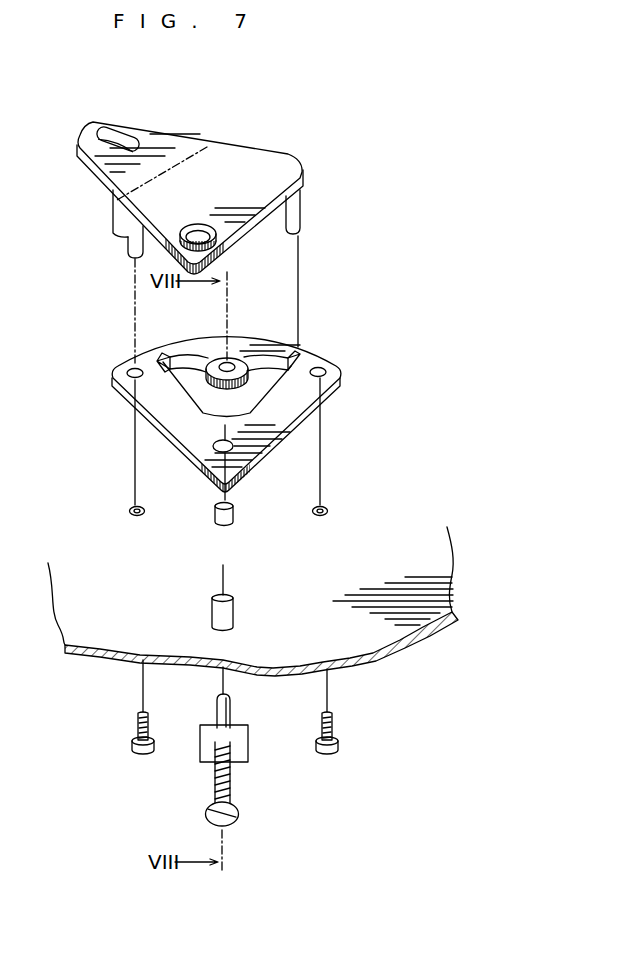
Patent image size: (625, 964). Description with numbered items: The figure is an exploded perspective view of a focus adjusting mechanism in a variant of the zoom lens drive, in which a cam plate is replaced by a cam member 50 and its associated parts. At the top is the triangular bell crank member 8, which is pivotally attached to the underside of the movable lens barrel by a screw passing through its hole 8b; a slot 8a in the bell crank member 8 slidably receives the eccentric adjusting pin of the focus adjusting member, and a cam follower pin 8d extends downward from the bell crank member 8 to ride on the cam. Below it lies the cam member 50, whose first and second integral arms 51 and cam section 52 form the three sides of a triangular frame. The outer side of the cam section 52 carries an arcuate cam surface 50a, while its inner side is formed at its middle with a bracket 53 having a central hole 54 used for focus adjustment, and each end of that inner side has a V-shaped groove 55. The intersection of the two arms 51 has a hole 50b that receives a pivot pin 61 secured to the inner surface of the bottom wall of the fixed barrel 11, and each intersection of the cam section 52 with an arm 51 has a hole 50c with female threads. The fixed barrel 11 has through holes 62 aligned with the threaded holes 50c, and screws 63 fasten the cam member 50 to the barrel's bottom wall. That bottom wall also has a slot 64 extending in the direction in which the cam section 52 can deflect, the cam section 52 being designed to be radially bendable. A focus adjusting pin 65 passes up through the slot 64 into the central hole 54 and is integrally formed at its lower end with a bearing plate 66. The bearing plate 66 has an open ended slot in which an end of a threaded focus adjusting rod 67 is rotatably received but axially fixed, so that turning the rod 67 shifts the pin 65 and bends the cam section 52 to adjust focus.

The bell crank member 8 is at (223, 148).
The slot 8a is at (122, 138).
The hole 8b is at (203, 232).
The cam follower pin 8d is at (303, 215).
The fixed barrel 11 is at (423, 620).
The cam member 50 is at (204, 374).
The arcuate cam surface 50a is at (277, 343).
The hole 50b is at (217, 452).
The hole with female threads 50c is at (133, 372).
The first and second arms 51 is at (142, 398).
The cam section 52 is at (173, 348).
The bracket 53 is at (217, 363).
The central hole 54 is at (228, 365).
The V-shaped groove 55 is at (157, 365).
The pivot pin 61 is at (235, 613).
The through holes 62 is at (137, 516).
The screws 63 is at (143, 753).
The slot 64 is at (235, 520).
The focus adjusting pin 65 is at (230, 715).
The bearing plate 66 is at (242, 752).
The focus adjusting rod 67 is at (238, 813).